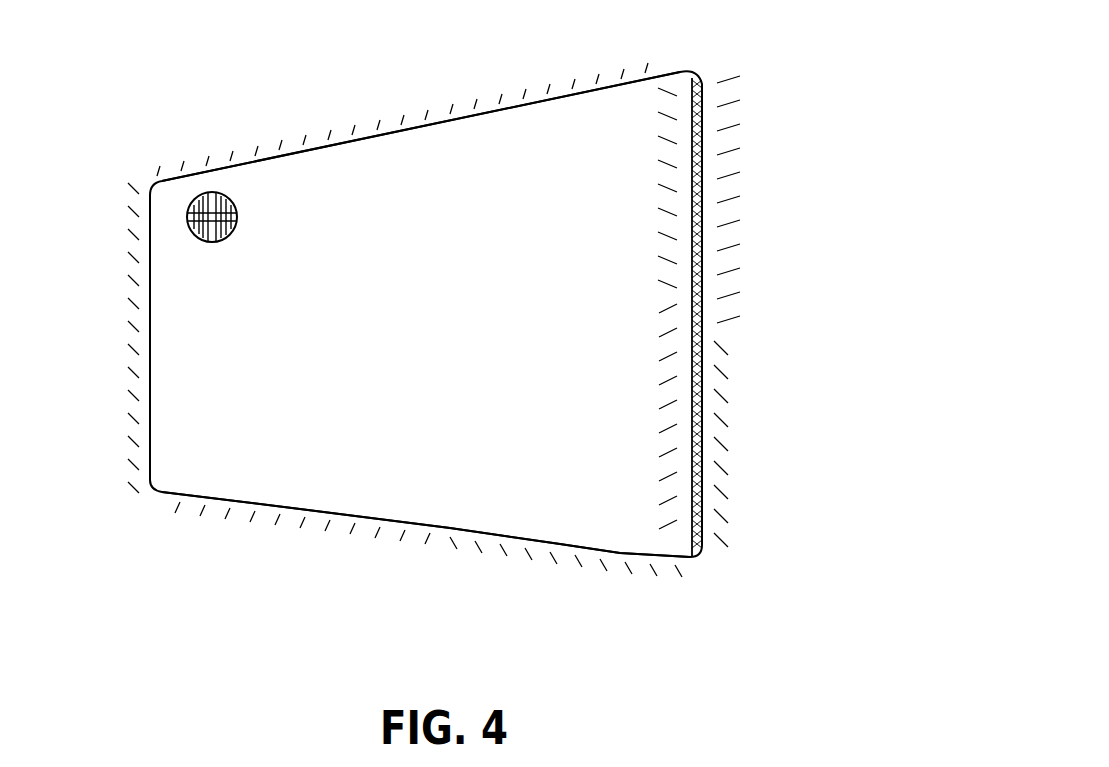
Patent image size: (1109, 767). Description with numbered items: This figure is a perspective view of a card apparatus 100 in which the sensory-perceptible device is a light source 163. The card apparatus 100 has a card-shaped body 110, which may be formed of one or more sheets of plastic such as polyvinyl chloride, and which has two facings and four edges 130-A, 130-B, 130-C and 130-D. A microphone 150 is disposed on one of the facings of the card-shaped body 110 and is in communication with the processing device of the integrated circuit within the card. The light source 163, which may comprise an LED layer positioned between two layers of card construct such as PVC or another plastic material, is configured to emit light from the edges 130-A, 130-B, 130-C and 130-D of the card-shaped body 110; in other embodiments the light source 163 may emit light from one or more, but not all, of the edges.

The card apparatus 100 is at (244, 100).
The card-shaped body 110 is at (440, 310).
The edge 130-A is at (705, 280).
The edge 130-B is at (381, 520).
The edge 130-C is at (141, 350).
The edge 130-D is at (395, 131).
The microphone 150 is at (203, 187).
The light source 163 is at (705, 167).